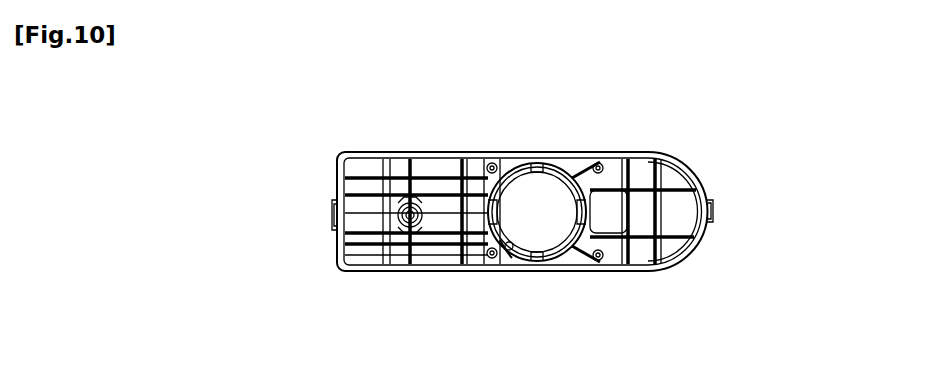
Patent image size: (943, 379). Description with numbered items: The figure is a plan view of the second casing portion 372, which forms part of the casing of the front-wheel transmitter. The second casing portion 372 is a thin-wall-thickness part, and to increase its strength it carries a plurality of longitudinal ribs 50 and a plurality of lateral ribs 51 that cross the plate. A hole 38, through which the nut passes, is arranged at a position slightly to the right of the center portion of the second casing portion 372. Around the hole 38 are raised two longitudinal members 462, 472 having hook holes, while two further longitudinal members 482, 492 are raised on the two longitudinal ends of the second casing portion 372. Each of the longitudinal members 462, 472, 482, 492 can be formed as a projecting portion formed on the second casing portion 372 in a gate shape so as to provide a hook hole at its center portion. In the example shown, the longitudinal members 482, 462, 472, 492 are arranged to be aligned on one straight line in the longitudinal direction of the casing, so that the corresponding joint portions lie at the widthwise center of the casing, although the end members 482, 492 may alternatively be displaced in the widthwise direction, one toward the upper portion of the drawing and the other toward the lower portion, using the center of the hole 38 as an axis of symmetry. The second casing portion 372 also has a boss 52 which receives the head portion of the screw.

The hole 38 is at (515, 176).
The longitudinal ribs 50 is at (437, 250).
The lateral ribs 51 is at (447, 168).
The boss 52 is at (380, 247).
The second casing portion 372 is at (682, 158).
The longitudinal member 462 is at (512, 240).
The longitudinal member 472 is at (570, 174).
The longitudinal member 482 is at (332, 222).
The longitudinal member 492 is at (715, 201).